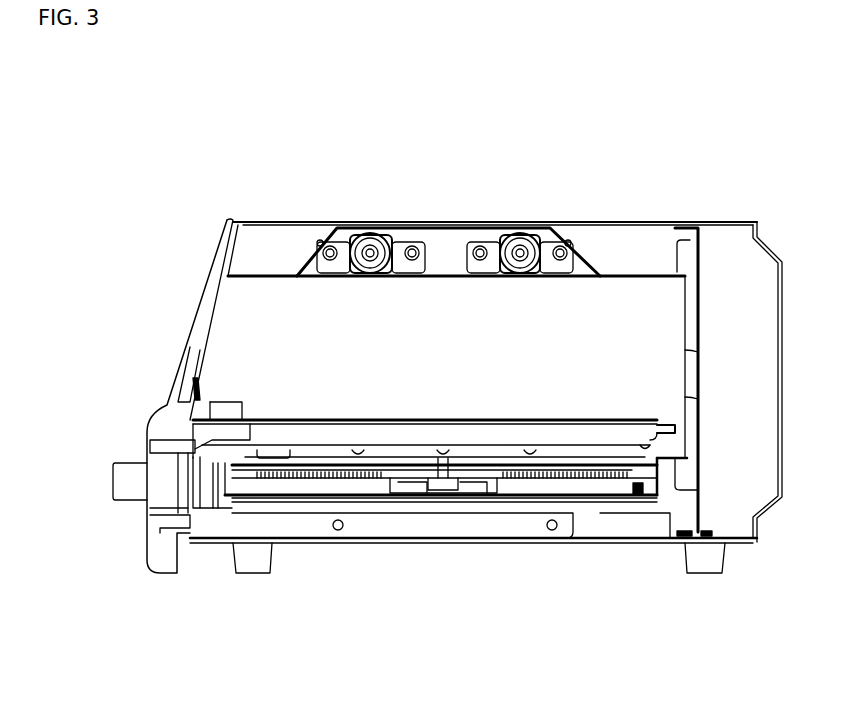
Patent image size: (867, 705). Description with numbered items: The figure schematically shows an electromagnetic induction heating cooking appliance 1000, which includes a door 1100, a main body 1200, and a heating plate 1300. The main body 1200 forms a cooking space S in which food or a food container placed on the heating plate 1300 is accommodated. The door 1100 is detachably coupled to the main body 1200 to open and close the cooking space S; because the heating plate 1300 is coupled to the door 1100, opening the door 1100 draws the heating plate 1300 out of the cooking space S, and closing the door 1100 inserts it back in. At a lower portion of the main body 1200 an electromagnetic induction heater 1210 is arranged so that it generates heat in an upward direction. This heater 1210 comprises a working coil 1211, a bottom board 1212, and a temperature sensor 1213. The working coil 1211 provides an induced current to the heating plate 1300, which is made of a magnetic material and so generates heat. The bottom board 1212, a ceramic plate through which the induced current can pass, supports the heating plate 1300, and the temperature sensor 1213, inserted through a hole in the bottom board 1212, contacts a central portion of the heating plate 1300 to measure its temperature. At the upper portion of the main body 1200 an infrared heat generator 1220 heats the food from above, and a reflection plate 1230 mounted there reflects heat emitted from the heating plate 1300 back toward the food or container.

The cooking appliance 1000 is at (230, 68).
The door 1100 is at (150, 410).
The main body 1200 is at (512, 205).
The electromagnetic induction heater 1210 is at (605, 637).
The working coil 1211 is at (533, 487).
The bottom board 1212 is at (605, 463).
The temperature sensor 1213 is at (440, 462).
The infrared heat generator 1220 is at (527, 237).
The reflection plate 1230 is at (442, 240).
The heating plate 1300 is at (328, 448).
The cooking space S is at (622, 310).